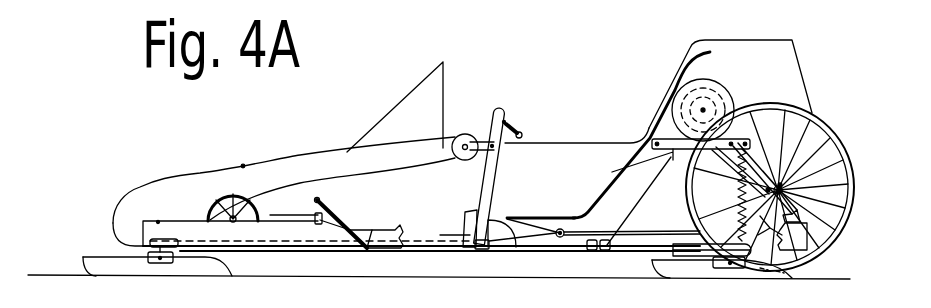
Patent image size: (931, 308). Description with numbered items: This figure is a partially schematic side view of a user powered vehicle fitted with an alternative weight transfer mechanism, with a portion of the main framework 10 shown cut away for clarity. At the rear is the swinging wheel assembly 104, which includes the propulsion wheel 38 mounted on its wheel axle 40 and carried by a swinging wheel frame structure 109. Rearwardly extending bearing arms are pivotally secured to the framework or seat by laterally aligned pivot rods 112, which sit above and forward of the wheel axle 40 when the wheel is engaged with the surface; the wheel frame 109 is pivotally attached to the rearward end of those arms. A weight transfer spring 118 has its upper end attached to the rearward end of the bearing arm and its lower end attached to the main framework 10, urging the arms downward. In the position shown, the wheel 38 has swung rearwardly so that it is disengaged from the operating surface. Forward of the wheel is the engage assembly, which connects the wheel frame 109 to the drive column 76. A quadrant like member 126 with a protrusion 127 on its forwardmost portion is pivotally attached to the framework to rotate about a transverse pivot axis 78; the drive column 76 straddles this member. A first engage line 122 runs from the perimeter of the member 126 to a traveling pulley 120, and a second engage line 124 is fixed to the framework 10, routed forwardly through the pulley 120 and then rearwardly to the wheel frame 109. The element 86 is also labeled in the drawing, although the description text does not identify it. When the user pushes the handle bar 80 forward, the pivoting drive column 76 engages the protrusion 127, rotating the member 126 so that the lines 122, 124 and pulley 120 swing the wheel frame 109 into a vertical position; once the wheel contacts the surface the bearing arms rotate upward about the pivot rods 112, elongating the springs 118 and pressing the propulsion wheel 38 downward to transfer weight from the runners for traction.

The main framework 10 is at (798, 244).
The propulsion wheel 38 is at (833, 134).
The wheel axle 40 is at (782, 188).
The drive column 76 is at (480, 175).
The transverse pivot axis 78 is at (476, 250).
The handle bar 80 is at (517, 125).
The swing arm 86 is at (715, 163).
The swinging wheel assembly 104 is at (760, 92).
The swinging wheel frame structure 109 is at (787, 194).
The pivot rods 112 is at (652, 131).
The weight transfer springs 118 is at (747, 217).
The traveling pulley 120 is at (558, 238).
The first engage line 122 is at (522, 216).
The second engage line 124 is at (600, 216).
The quadrant like member 126 is at (467, 219).
The protrusion 127 is at (465, 208).